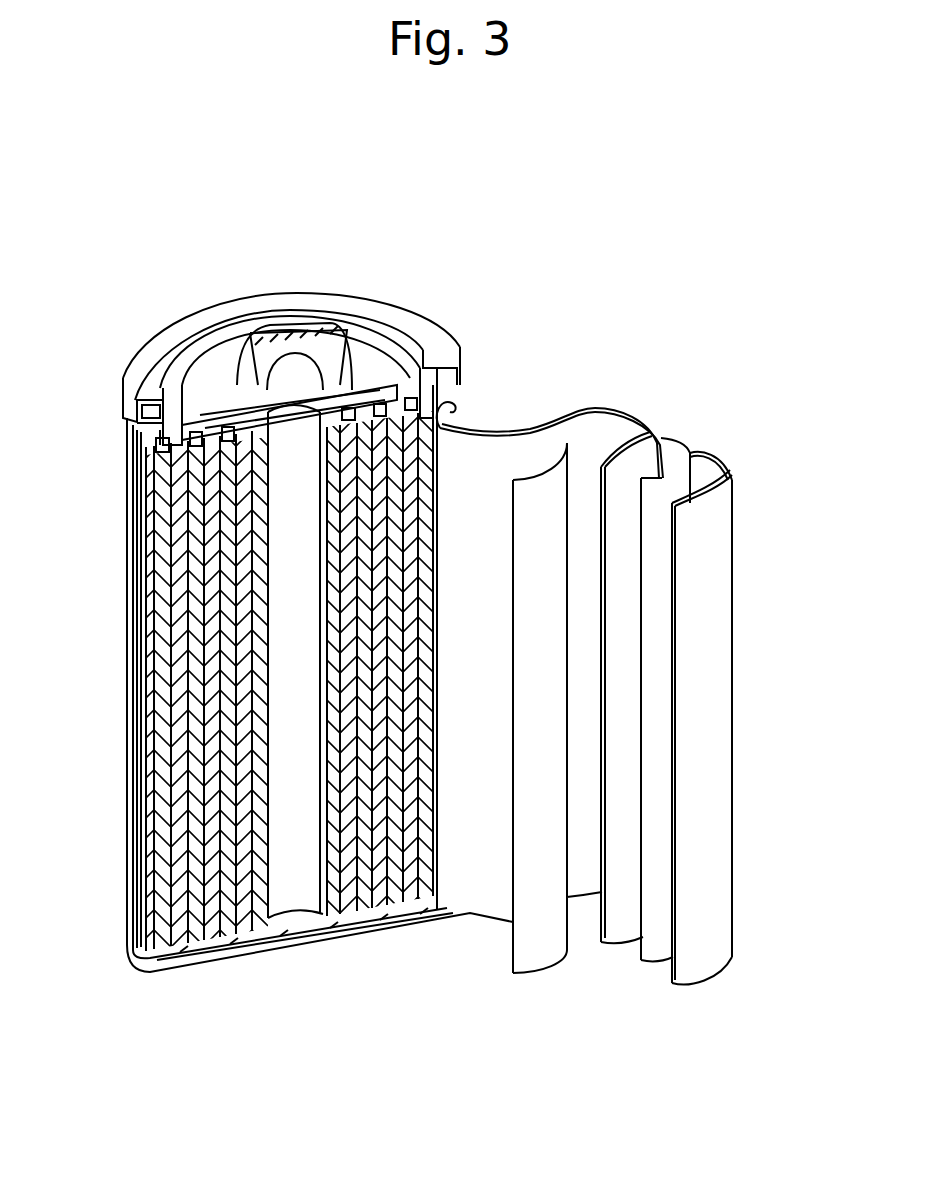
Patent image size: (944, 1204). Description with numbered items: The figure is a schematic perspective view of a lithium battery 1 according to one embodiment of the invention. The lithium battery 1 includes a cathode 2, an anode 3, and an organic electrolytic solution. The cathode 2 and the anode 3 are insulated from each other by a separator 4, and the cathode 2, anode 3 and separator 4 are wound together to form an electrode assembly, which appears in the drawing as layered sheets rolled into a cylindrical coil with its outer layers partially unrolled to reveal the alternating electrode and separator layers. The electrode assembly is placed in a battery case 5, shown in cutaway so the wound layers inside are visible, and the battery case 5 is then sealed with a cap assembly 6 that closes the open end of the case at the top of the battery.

The lithium battery 1 is at (700, 385).
The cathode 2 is at (720, 578).
The anode 3 is at (620, 477).
The separator 4 is at (687, 477).
The battery case 5 is at (128, 890).
The cap assembly 6 is at (307, 330).